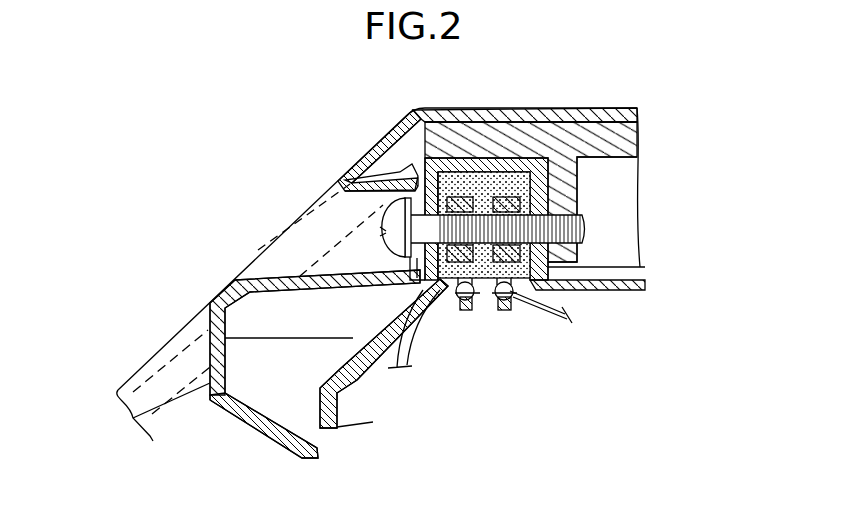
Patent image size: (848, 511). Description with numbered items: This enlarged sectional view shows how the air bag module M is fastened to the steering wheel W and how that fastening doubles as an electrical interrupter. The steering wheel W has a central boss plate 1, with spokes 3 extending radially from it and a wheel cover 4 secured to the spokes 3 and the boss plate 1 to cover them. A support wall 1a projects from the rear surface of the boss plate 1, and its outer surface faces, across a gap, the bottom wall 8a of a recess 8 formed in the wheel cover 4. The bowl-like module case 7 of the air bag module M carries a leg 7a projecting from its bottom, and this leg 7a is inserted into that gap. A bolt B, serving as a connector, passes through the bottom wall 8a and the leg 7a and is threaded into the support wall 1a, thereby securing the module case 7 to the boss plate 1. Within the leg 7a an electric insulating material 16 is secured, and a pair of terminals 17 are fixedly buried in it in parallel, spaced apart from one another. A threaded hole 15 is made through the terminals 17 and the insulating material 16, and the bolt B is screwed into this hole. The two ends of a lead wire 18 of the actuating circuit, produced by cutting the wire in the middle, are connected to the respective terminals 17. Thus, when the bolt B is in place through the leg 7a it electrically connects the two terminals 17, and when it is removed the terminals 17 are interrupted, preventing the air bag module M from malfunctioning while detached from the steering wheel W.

The boss plate 1 is at (640, 138).
The support wall 1a is at (577, 178).
The spoke 3 is at (182, 343).
The wheel cover 4 is at (553, 108).
The module case 7 is at (393, 320).
The leg 7a is at (474, 202).
The recess 8 is at (283, 274).
The bottom wall 8a is at (413, 268).
The threaded hole 15 is at (528, 194).
The electric insulating material 16 is at (487, 280).
The terminal 17 is at (502, 203).
The lead wire 18 is at (430, 313).
The bolt B is at (587, 222).
The air bag module M is at (340, 363).
The steering wheel W is at (330, 155).